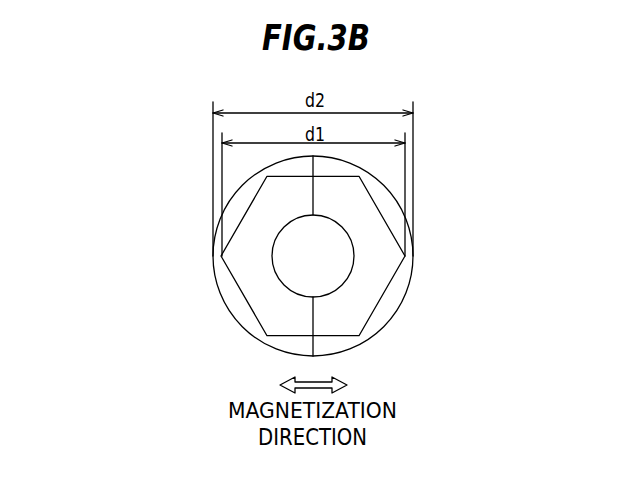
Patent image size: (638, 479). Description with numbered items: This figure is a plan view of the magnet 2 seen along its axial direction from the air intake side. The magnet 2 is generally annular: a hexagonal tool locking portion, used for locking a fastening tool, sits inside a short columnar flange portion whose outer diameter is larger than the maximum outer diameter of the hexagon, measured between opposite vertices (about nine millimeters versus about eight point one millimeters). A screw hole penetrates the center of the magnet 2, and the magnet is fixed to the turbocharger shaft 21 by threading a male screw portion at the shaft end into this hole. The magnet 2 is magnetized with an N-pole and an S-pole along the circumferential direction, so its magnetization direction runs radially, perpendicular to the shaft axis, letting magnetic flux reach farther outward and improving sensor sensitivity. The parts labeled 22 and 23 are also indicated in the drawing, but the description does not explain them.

The magnet 2 is at (260, 218).
The turbocharger shaft 21 is at (263, 308).
The outer peripheral portion 22 is at (400, 282).
The through hole 23 is at (330, 275).